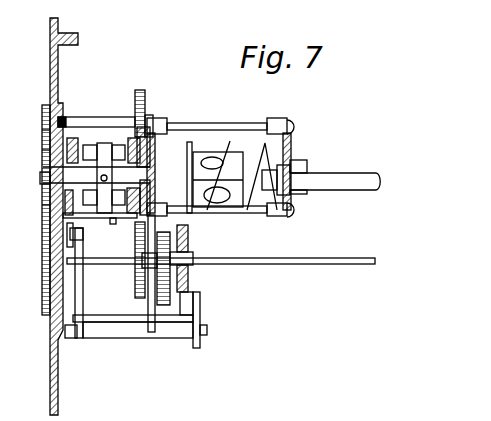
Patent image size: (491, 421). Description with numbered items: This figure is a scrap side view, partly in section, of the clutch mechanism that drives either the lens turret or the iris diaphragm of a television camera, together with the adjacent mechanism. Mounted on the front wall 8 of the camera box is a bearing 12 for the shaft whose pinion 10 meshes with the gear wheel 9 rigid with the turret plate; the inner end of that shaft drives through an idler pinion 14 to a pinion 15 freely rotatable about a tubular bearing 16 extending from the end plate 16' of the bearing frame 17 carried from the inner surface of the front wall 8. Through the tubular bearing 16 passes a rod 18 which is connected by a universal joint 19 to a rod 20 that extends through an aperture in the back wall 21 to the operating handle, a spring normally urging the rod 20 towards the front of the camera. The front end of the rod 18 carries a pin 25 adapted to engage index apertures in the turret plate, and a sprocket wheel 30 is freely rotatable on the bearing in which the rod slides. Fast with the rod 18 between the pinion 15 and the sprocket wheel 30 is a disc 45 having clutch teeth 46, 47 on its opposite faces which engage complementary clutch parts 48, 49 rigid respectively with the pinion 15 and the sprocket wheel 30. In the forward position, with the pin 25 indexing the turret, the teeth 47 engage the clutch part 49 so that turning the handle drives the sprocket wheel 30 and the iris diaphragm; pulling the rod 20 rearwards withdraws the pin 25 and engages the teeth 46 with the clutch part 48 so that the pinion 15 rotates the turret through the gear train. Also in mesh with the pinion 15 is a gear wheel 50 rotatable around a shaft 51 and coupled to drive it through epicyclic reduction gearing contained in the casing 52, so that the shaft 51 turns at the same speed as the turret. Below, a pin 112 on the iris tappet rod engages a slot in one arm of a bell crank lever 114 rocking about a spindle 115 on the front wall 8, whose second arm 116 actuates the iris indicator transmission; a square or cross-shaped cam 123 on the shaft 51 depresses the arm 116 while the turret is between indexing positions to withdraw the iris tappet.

The front wall 8 is at (60, 30).
The gear wheel 9 is at (42, 150).
The pinion 10 is at (46, 105).
The bearing 12 is at (60, 120).
The idler pinion 14 is at (146, 98).
The pinion 15 is at (122, 140).
The tubular bearing 16 is at (164, 173).
The end plate 16' is at (217, 117).
The bearing frame 17 is at (230, 122).
The rod 18 is at (80, 195).
The universal joint 19 is at (236, 160).
The rod 20 is at (343, 175).
The back wall 21 is at (48, 207).
The pin 25 is at (40, 180).
The sprocket wheel 30 is at (80, 140).
The disc 45 is at (110, 200).
The clutch teeth 46 is at (140, 95).
The clutch teeth 47 is at (79, 150).
The clutch part 48 is at (137, 258).
The clutch part 49 is at (42, 135).
The gear wheel 50 is at (140, 300).
The shaft 51 is at (266, 265).
The casing 52 is at (190, 276).
The pin 112 is at (83, 238).
The bell crank lever 114 is at (83, 292).
The spindle 115 is at (74, 338).
The second arm 116 is at (197, 346).
The cam 123 is at (190, 238).